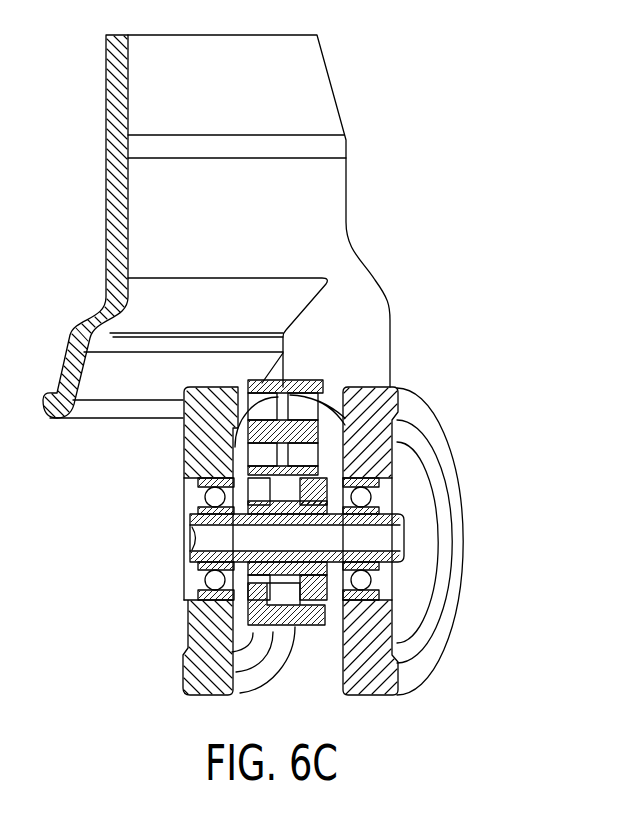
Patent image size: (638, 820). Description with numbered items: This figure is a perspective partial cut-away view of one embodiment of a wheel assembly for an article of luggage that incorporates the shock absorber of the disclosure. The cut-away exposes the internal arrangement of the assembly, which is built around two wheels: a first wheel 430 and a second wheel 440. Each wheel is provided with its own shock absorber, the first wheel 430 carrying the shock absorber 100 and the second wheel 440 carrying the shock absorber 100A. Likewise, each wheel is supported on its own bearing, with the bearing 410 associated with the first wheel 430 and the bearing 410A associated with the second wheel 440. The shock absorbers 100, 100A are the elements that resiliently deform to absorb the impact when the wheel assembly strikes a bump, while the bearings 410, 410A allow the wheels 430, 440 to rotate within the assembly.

The shock absorber 100 is at (390, 566).
The shock absorber 100A is at (190, 642).
The bearing 410 is at (370, 625).
The bearing 410A is at (200, 585).
The first wheel 430 is at (370, 420).
The second wheel 440 is at (195, 682).